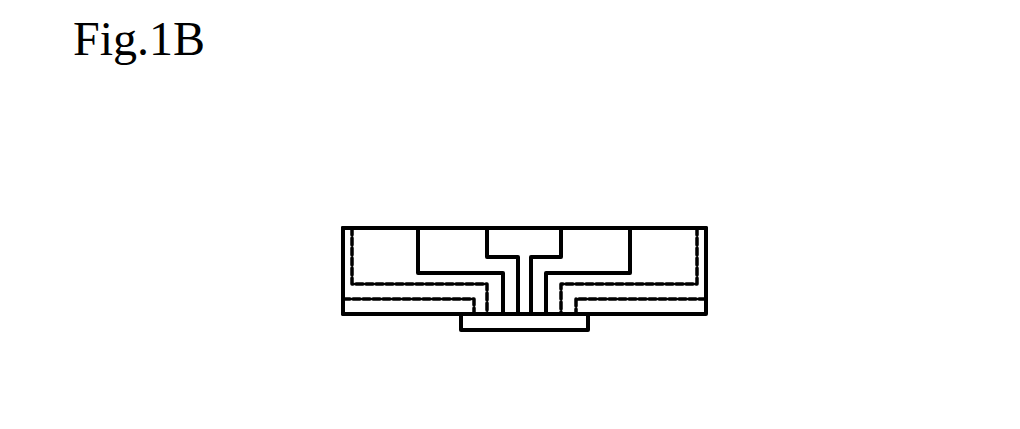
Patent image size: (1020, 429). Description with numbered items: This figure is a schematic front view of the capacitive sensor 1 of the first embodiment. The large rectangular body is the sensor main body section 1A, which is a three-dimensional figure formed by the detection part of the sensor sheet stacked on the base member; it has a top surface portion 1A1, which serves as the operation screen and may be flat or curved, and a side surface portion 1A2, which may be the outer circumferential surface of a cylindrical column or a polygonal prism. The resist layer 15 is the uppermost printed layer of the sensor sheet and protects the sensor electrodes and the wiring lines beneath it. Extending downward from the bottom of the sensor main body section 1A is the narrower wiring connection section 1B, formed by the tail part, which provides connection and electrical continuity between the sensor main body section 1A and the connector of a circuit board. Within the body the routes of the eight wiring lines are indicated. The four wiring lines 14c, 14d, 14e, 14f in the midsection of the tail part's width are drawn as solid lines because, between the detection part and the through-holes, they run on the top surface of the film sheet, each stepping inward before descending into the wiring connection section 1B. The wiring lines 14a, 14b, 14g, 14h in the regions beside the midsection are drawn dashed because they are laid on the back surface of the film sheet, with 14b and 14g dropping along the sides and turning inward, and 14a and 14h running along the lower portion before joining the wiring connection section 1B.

The capacitive sensor 1 is at (512, 257).
The sensor main body section 1A is at (657, 226).
The top surface portion 1A1 is at (349, 228).
The side surface portion 1A2 is at (343, 274).
The wiring connection section 1B is at (590, 321).
The resist layer 15 is at (343, 242).
The wiring line 14a is at (362, 320).
The wiring line 14b is at (367, 237).
The wiring line 14c is at (424, 236).
The wiring line 14d is at (494, 236).
The wiring line 14e is at (565, 235).
The wiring line 14f is at (627, 238).
The wiring line 14g is at (712, 238).
The wiring line 14h is at (673, 320).